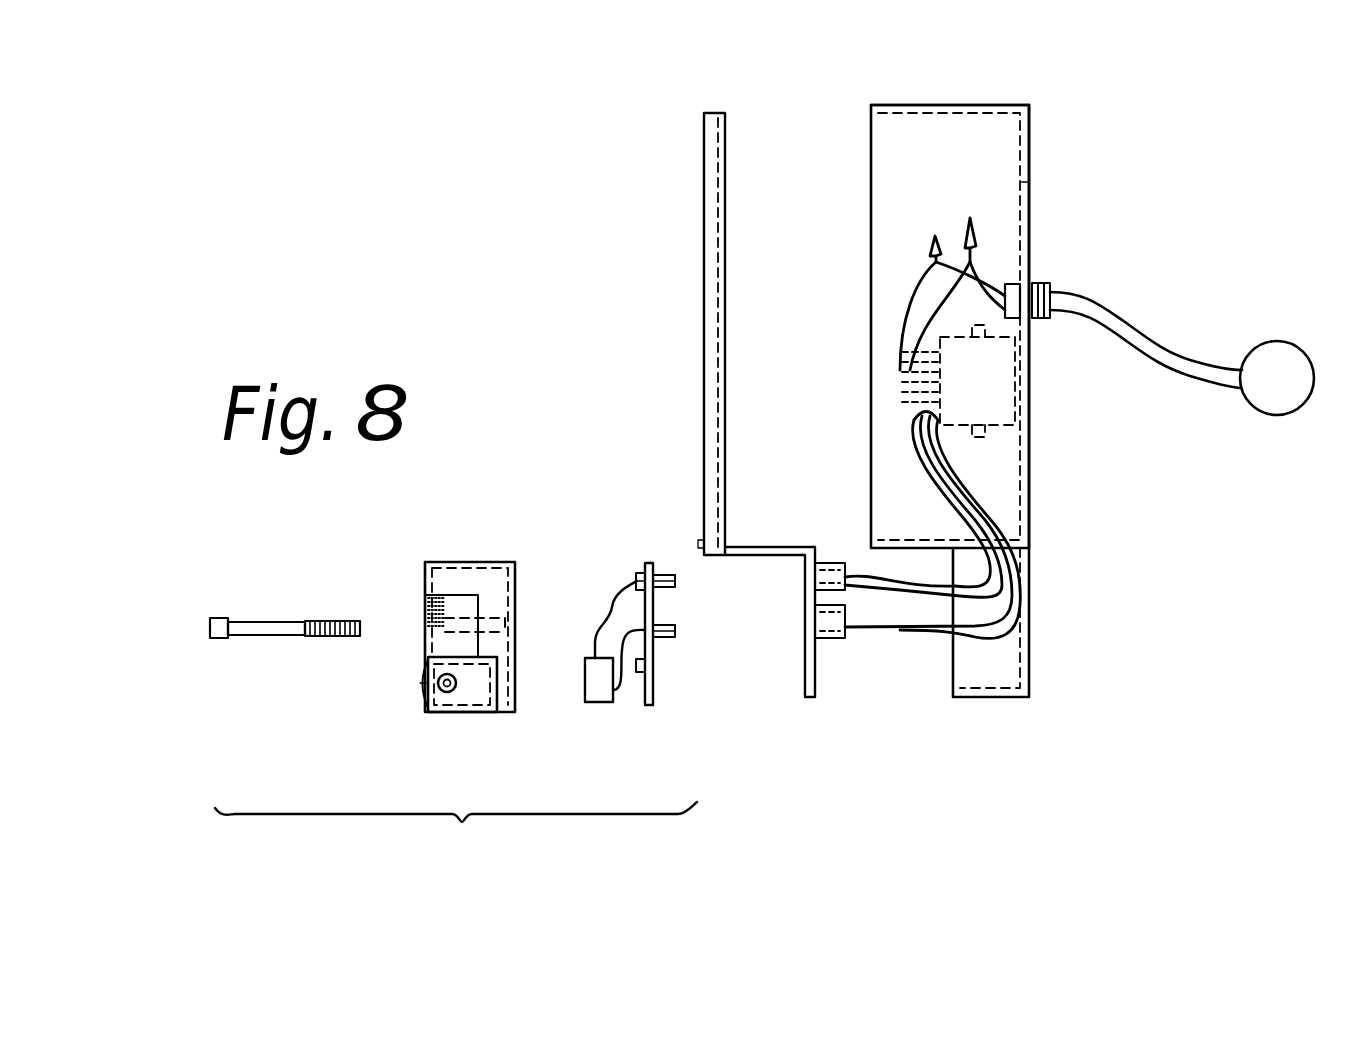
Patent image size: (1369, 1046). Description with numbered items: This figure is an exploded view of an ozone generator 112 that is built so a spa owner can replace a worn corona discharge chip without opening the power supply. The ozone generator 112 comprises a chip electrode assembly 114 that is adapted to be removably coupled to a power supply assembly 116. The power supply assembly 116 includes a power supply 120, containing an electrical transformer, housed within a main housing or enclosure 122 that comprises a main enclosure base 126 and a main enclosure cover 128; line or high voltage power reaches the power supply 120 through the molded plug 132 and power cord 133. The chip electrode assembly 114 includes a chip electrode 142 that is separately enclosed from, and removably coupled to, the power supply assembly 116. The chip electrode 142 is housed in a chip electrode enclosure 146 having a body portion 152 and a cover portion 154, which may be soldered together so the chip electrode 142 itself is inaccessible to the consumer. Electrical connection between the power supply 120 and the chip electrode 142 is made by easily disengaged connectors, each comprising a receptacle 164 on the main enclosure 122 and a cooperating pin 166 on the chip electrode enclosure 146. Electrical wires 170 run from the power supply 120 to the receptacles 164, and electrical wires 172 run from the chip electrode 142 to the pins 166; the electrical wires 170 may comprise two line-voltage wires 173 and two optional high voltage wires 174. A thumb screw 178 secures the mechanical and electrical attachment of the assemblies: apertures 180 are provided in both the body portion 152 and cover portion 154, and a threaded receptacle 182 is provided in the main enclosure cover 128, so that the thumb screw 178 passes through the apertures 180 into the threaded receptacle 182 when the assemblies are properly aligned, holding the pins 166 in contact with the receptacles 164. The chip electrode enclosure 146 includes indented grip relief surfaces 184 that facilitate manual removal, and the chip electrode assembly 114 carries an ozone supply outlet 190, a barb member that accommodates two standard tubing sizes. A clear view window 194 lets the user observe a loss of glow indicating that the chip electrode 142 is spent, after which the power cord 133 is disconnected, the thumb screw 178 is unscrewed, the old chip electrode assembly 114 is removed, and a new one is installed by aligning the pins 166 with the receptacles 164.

The ozone generator 112 is at (542, 162).
The chip electrode assembly 114 is at (426, 852).
The power supply assembly 116 is at (1037, 129).
The power supply 120 is at (997, 375).
The main housing or enclosure 122 is at (1045, 214).
The main enclosure base 126 is at (930, 105).
The main enclosure cover 128 is at (708, 250).
The molded plug 132 is at (1320, 320).
The power cord 133 is at (1155, 350).
The chip electrode 142 is at (598, 721).
The chip electrode enclosure 146 is at (418, 705).
The body portion 152 is at (460, 562).
The cover portion 154 is at (640, 575).
The receptacle 164 is at (837, 562).
The pin 166 is at (665, 575).
The electrical wires 170 is at (905, 632).
The electrical wires 172 is at (597, 630).
The 120V wires 173 is at (1012, 625).
The high voltage wires 174 is at (1000, 548).
The thumb screw 178 is at (262, 620).
The apertures 180 is at (425, 635).
The threaded receptacle 182 is at (852, 610).
The grip relief surfaces 184 is at (425, 597).
The ozone supply outlet 190 is at (455, 691).
The clear view window 194 is at (420, 683).